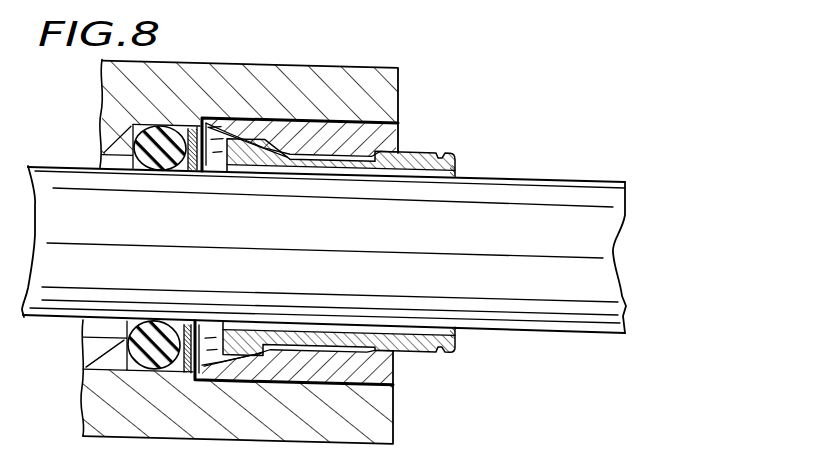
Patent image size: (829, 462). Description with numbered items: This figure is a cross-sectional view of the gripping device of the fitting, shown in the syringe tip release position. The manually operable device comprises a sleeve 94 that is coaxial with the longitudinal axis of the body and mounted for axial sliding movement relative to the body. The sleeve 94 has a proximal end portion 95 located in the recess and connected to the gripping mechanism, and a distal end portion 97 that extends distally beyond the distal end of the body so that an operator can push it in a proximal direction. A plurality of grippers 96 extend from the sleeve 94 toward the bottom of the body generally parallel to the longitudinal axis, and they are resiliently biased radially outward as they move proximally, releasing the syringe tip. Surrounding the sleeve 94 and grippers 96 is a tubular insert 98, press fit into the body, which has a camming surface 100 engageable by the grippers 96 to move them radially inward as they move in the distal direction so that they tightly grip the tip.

The sleeve 94 is at (420, 150).
The proximal end portion 95 is at (345, 67).
The grippers 96 is at (326, 383).
The distal end portion 97 is at (452, 342).
The tubular insert 98 is at (365, 363).
The camming surface 100 is at (339, 121).